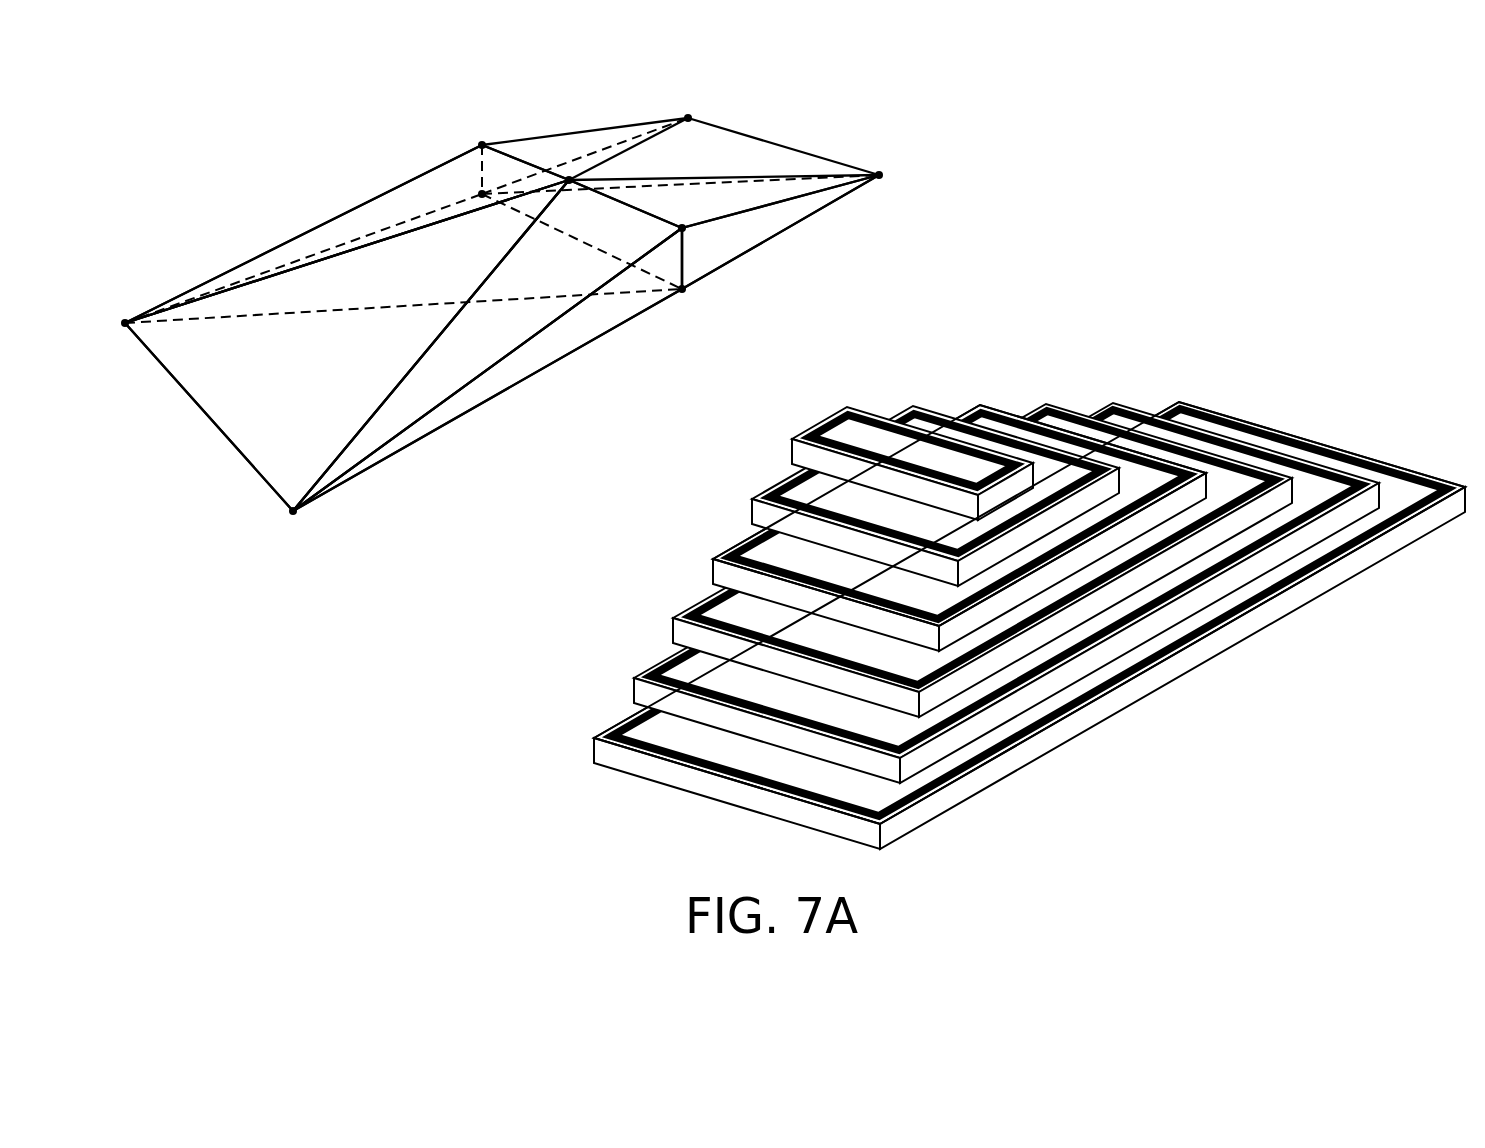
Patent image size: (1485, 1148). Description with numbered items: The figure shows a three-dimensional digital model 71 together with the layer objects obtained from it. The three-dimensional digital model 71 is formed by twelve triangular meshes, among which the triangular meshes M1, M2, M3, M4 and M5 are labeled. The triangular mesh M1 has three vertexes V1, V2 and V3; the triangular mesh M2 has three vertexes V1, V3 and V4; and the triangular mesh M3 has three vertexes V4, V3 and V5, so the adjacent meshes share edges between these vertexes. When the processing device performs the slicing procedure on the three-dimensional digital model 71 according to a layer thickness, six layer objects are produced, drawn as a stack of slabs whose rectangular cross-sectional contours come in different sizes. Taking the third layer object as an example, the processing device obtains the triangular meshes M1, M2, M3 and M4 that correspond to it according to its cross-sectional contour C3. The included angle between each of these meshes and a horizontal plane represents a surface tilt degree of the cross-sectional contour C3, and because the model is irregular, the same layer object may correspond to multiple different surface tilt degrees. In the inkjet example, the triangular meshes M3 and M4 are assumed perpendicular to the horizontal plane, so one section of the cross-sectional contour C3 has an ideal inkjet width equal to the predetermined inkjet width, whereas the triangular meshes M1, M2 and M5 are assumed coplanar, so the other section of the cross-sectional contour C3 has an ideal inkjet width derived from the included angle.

The three-dimensional digital model 71 is at (328, 170).
The vertex V1 is at (569, 180).
The vertex V2 is at (125, 323).
The vertex V3 is at (295, 513).
The vertex V4 is at (682, 228).
The vertex V5 is at (682, 289).
The triangular mesh M1 is at (300, 380).
The triangular mesh M2 is at (393, 413).
The triangular mesh M3 is at (454, 407).
The triangular mesh M4 is at (730, 233).
The triangular mesh M5 is at (450, 182).
The cross-sectional contour C3 is at (975, 637).